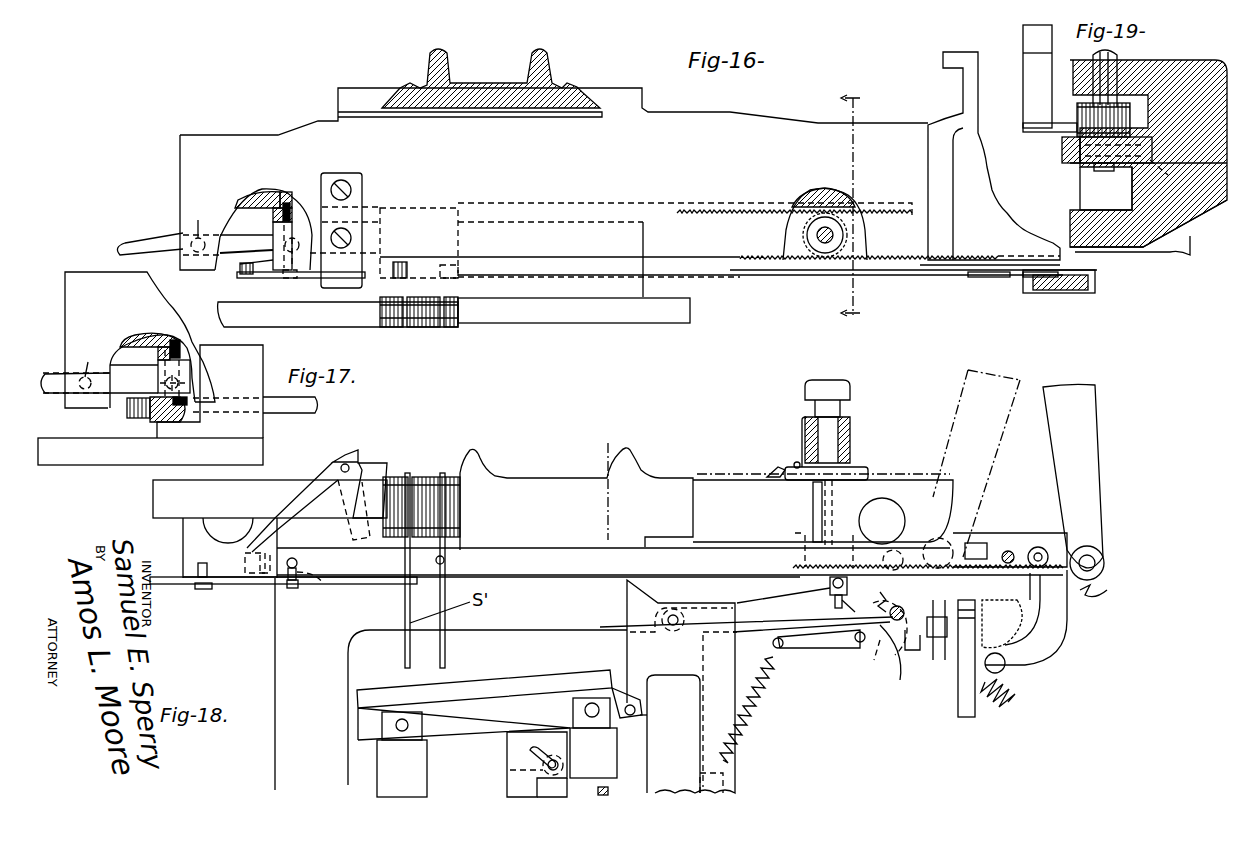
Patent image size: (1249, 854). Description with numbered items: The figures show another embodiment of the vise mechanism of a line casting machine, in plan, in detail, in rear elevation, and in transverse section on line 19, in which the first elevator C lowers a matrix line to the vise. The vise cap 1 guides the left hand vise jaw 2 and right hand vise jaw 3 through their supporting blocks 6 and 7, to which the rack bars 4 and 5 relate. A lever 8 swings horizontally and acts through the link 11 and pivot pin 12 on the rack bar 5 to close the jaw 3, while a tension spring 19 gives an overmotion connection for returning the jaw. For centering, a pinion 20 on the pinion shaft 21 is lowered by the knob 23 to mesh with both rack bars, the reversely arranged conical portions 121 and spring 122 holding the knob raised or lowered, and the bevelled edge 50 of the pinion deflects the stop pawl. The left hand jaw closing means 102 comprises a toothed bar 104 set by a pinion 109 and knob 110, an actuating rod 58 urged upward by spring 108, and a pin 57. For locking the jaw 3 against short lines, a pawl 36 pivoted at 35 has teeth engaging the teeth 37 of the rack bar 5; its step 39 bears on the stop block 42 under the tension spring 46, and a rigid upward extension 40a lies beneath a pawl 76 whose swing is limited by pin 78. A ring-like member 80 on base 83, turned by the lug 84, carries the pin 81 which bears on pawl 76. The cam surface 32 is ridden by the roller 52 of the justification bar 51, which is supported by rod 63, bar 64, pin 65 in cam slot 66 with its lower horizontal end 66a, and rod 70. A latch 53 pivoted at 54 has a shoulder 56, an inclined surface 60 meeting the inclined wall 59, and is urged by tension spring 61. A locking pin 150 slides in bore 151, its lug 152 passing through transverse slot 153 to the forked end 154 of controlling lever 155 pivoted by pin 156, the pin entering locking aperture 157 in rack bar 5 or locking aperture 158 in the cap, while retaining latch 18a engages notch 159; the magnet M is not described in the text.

In FIG. 16, the vise cap 1 is at (181, 183).
In FIG. 19, the vise cap 1 is at (1190, 66).
In FIG. 17, the vise cap 1 is at (68, 293).
In FIG. 18, the vise cap 1 is at (185, 528).
In FIG. 16, the left hand vise jaw 2 is at (566, 312).
In FIG. 19, the left hand vise jaw 2 is at (1023, 66).
In FIG. 18, the left hand vise jaw 2 is at (540, 487).
In FIG. 16, the right hand vise jaw 3 is at (338, 293).
In FIG. 17, the right hand vise jaw 3 is at (135, 453).
In FIG. 18, the right hand vise jaw 3 is at (262, 487).
In FIG. 16, the rack bar 4 is at (820, 190).
In FIG. 19, the rack bar 4 is at (1140, 155).
In FIG. 16, the rack bar 5 is at (744, 268).
In FIG. 19, the rack bar 5 is at (1062, 152).
In FIG. 17, the rack bar 5 is at (310, 408).
In FIG. 18, the rack bar 5 is at (550, 565).
In FIG. 16, the jaw supporting block 6 is at (637, 287).
In FIG. 16, the jaw supporting block 7 is at (262, 260).
In FIG. 17, the jaw supporting block 7 is at (258, 358).
In FIG. 18, the jaw supporting block 7 is at (375, 565).
In FIG. 16, the lever 8 is at (1052, 287).
In FIG. 18, the lever 8 is at (992, 455).
In FIG. 16, the link 11 is at (1095, 275).
In FIG. 18, the link 11 is at (1063, 570).
In FIG. 16, the pivot pin 12 is at (1030, 282).
In FIG. 18, the pivot pin 12 is at (1038, 547).
In FIG. 16, the retaining latch 18a is at (270, 279).
In FIG. 18, the retaining latch 18a is at (348, 465).
In FIG. 16, the tension spring 19 is at (851, 206).
In FIG. 16, the pinion 20 is at (822, 252).
In FIG. 19, the pinion 20 is at (1077, 107).
In FIG. 18, the pinion 20 is at (805, 555).
In FIG. 19, the pinion shaft 21 is at (1120, 56).
In FIG. 18, the pinion shaft 21 is at (848, 457).
In FIG. 18, the knob 23 is at (805, 389).
In FIG. 18, the cam surface 32 is at (650, 704).
In FIG. 18, the pivot 35 is at (673, 626).
In FIG. 18, the pawl 36 is at (749, 610).
In FIG. 18, the teeth 37 is at (790, 566).
In FIG. 18, the step 39 is at (889, 594).
In FIG. 18, the upward extension 40a is at (830, 593).
In FIG. 18, the stop block 42 is at (852, 609).
In FIG. 18, the tension spring 46 is at (893, 620).
In FIG. 19, the bevelled edge 50 is at (1060, 132).
In FIG. 18, the justification bar 51 is at (497, 683).
In FIG. 18, the roller 52 is at (650, 728).
In FIG. 18, the latch 53 is at (806, 645).
In FIG. 18, the pivot 54 is at (860, 643).
In FIG. 18, the shoulder 56 is at (915, 660).
In FIG. 18, the pin 57 is at (940, 618).
In FIG. 18, the actuating rod 58 is at (958, 708).
In FIG. 18, the inclined wall 59 is at (878, 655).
In FIG. 18, the inclined surface 60 is at (900, 665).
In FIG. 18, the tension spring 61 is at (760, 680).
In FIG. 18, the rod 63 is at (383, 797).
In FIG. 18, the bar 64 is at (520, 766).
In FIG. 18, the pin 65 is at (562, 747).
In FIG. 18, the cam slot 66 is at (530, 748).
In FIG. 18, the lower horizontal end 66a is at (537, 792).
In FIG. 18, the rod 70 is at (610, 790).
In FIG. 16, the pawl 76 is at (995, 278).
In FIG. 18, the pawl 76 is at (1008, 565).
In FIG. 18, the pin 78 is at (940, 548).
In FIG. 18, the ring-like member 80 is at (862, 470).
In FIG. 18, the pin 81 is at (813, 496).
In FIG. 18, the base 83 is at (796, 462).
In FIG. 18, the lug 84 is at (770, 467).
In FIG. 18, the left hand jaw closing means 102 is at (992, 560).
In FIG. 18, the toothed bar 104 is at (1095, 597).
In FIG. 18, the spring 108 is at (1010, 696).
In FIG. 18, the pinion 109 is at (1018, 625).
In FIG. 16, the knob 110 is at (963, 95).
In FIG. 18, the conical portions 121 is at (848, 432).
In FIG. 18, the spring 122 is at (802, 436).
In FIG. 16, the locking pin 150 is at (288, 192).
In FIG. 17, the locking pin 150 is at (158, 368).
In FIG. 18, the locking pin 150 is at (294, 558).
In FIG. 16, the bore 151 is at (273, 225).
In FIG. 19, the lug 152 is at (1092, 187).
In FIG. 17, the lug 152 is at (186, 384).
In FIG. 18, the lug 152 is at (292, 588).
In FIG. 19, the transverse slot 153 is at (1095, 167).
In FIG. 18, the transverse slot 153 is at (324, 585).
In FIG. 16, the forked end 154 is at (296, 230).
In FIG. 19, the forked end 154 is at (1100, 171).
In FIG. 17, the forked end 154 is at (180, 376).
In FIG. 16, the controlling lever 155 is at (145, 245).
In FIG. 17, the controlling lever 155 is at (47, 373).
In FIG. 18, the controlling lever 155 is at (160, 577).
In FIG. 16, the pin 156 is at (201, 227).
In FIG. 17, the pin 156 is at (76, 370).
In FIG. 18, the pin 156 is at (202, 585).
In FIG. 16, the locking aperture 157 is at (292, 280).
In FIG. 17, the locking aperture 157 is at (182, 424).
In FIG. 18, the locking aperture 157 is at (438, 565).
In FIG. 16, the locking aperture 158 is at (280, 196).
In FIG. 17, the locking aperture 158 is at (178, 336).
In FIG. 16, the notch 159 is at (240, 272).
In FIG. 17, the notch 159 is at (127, 408).
In FIG. 18, the notch 159 is at (262, 575).
In FIG. 16, the first elevator C is at (478, 84).
In FIG. 16, the magnet coil M is at (418, 327).
In FIG. 18, the magnet coil M is at (422, 478).